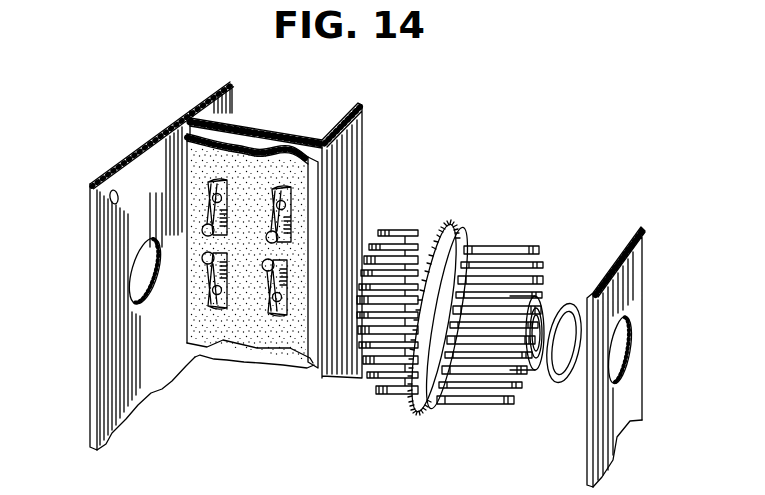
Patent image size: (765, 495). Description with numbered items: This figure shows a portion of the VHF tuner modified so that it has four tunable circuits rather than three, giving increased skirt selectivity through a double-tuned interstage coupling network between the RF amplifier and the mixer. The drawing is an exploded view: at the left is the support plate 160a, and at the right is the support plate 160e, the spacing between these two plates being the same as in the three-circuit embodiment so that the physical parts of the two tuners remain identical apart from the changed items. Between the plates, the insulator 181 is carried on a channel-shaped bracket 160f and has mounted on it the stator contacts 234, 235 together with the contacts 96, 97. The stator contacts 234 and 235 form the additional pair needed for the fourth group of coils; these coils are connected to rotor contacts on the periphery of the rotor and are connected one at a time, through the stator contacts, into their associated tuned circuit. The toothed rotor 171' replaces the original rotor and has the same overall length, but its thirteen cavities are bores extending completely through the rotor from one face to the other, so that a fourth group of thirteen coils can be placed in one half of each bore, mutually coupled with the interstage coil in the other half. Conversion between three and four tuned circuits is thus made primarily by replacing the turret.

The support plate 160a is at (103, 254).
The channel bracket 160f is at (228, 105).
The insulator 181 is at (272, 167).
The stator contact 235 is at (213, 208).
The terminal 97 is at (290, 230).
The stator contact 234 is at (208, 278).
The terminal 96 is at (272, 273).
The rotor 171' is at (468, 298).
The support plate 160e is at (648, 256).